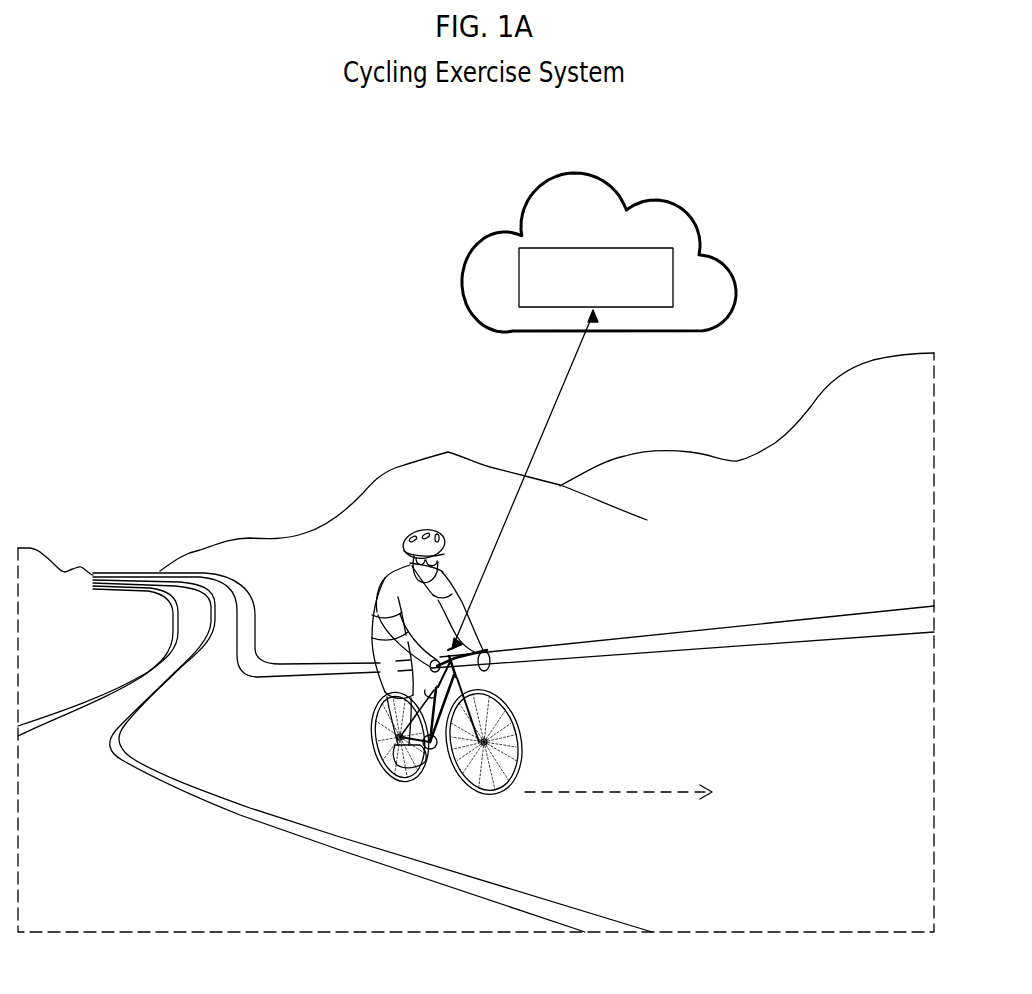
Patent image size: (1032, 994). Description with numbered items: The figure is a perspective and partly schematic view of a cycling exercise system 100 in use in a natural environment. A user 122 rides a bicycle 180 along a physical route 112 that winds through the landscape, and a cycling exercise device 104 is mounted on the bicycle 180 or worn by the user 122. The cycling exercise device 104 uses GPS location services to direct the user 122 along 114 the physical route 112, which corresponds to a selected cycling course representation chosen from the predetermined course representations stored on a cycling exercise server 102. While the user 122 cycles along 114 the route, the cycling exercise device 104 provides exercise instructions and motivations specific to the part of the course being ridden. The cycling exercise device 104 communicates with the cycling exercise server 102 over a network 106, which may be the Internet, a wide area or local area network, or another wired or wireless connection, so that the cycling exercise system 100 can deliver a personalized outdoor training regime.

The cycling exercise system 100 is at (140, 233).
The cycling exercise server 102 is at (653, 243).
The cycling exercise device 104 is at (486, 645).
The network 106 is at (540, 448).
The physical route 112 is at (668, 757).
The direction along the route 114 is at (634, 800).
The user 122 is at (372, 593).
The bicycle 180 is at (510, 718).